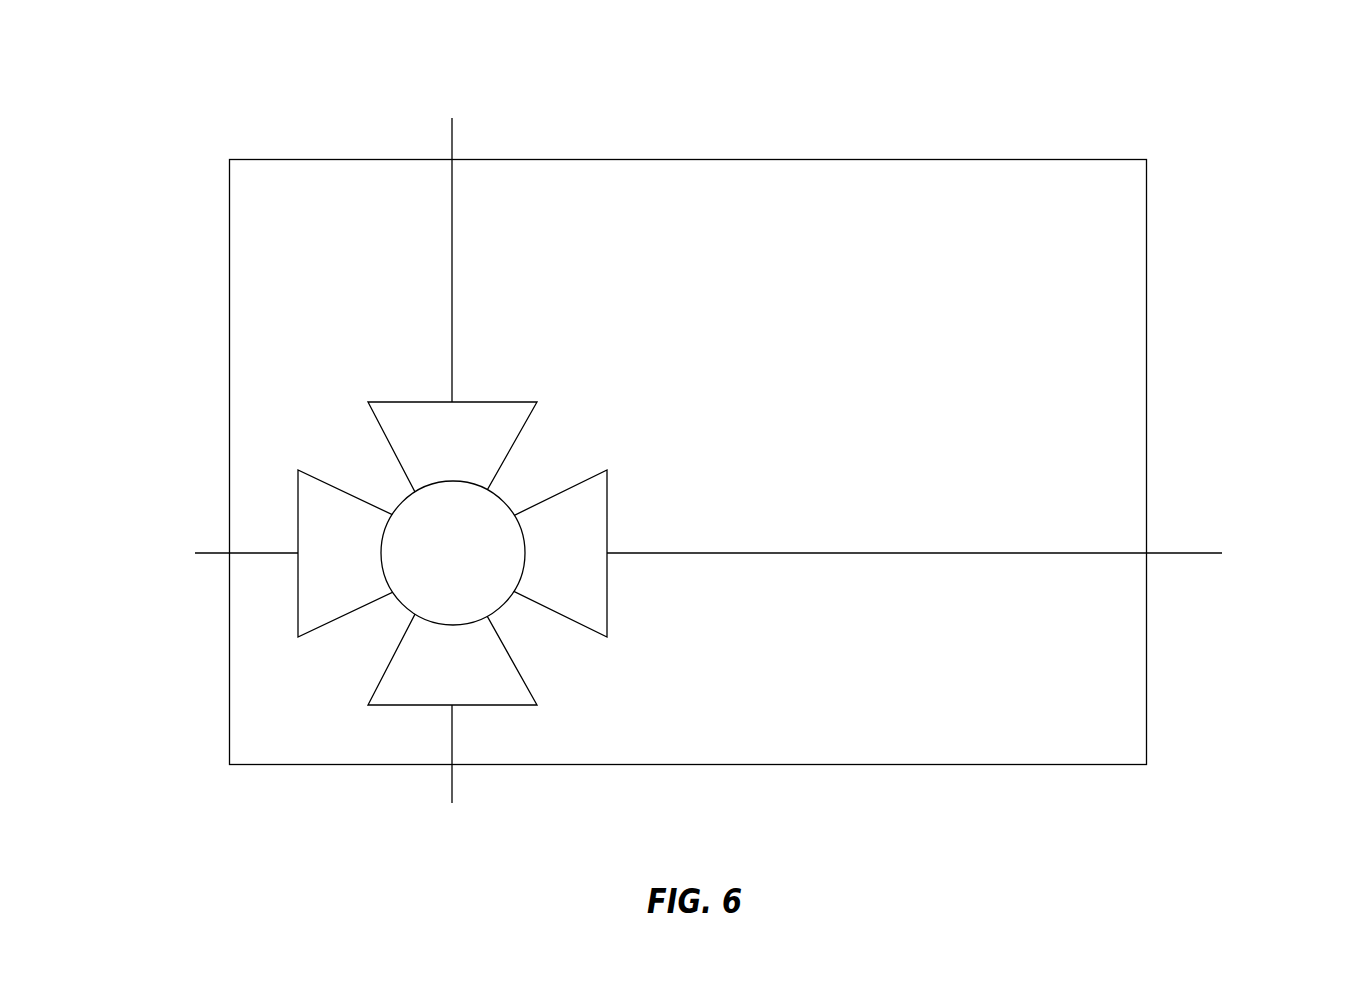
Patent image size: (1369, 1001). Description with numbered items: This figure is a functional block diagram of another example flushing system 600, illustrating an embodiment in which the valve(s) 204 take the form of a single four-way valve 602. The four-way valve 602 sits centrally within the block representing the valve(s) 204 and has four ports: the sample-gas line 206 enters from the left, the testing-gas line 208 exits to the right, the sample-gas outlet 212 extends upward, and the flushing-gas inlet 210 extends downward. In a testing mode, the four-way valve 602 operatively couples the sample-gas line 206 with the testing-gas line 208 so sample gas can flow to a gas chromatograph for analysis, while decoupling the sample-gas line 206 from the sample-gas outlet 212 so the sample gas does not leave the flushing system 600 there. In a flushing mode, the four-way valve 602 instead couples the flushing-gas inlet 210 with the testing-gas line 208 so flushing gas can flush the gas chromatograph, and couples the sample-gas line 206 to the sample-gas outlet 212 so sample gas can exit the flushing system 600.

The flushing system 600 is at (1064, 90).
The valve(s) 204 is at (765, 197).
The sample-gas outlet 212 is at (468, 112).
The flushing-gas inlet 210 is at (507, 856).
The sample-gas line 206 is at (152, 594).
The testing-gas line 208 is at (1303, 594).
The four-way valve 602 is at (472, 607).